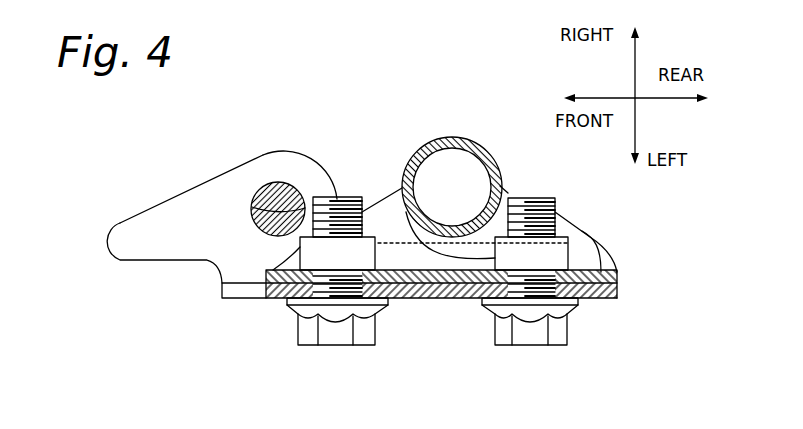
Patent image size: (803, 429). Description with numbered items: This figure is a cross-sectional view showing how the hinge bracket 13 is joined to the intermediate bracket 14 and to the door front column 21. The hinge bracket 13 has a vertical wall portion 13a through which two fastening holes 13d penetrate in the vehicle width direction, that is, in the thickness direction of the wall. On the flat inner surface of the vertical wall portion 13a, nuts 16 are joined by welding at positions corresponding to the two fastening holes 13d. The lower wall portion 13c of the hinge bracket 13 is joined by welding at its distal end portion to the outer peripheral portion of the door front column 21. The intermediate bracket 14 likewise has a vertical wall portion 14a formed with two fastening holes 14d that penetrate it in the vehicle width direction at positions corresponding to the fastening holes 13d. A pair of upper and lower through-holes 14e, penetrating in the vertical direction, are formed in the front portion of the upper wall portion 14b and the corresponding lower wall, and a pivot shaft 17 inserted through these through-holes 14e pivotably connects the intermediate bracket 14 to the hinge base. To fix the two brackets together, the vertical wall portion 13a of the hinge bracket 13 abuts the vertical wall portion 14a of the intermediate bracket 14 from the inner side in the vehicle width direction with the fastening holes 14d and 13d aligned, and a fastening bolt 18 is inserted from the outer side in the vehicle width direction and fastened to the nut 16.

The hinge bracket 13 is at (667, 208).
The vertical wall portion 13a is at (618, 268).
The lower wall portion 13c is at (592, 229).
The fastening holes 13d is at (555, 328).
The intermediate bracket 14 is at (257, 375).
The vertical wall portion 14a is at (272, 299).
The upper wall portion 14b is at (250, 262).
The fastening holes 14d is at (330, 308).
The through-holes 14e is at (252, 203).
The nuts 16 is at (411, 240).
The pivot shaft 17 is at (272, 181).
The fastening bolt 18 is at (497, 342).
The door front column 21 is at (425, 144).